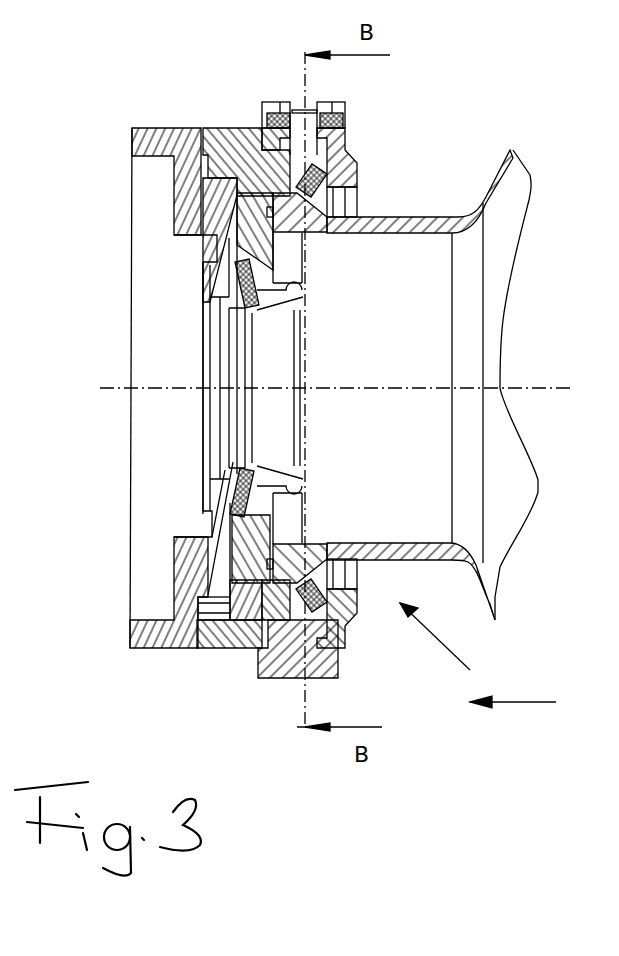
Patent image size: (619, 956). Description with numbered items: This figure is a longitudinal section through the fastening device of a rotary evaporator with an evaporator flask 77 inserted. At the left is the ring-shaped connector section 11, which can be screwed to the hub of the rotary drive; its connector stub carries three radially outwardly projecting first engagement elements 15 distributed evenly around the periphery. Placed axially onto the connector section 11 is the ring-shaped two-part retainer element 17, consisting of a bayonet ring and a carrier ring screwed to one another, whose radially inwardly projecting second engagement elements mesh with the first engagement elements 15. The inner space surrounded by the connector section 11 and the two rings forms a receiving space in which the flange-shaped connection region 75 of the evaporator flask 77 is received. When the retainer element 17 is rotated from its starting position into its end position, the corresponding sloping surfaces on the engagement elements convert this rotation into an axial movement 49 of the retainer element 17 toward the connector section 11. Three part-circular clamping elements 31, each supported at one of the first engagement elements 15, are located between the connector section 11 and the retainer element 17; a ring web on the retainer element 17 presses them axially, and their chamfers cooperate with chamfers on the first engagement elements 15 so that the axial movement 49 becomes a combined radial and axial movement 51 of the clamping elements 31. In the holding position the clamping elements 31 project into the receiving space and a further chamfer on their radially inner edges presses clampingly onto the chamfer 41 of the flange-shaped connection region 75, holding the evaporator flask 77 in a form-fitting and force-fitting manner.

The connector section 11 is at (158, 137).
The first engagement elements 15 is at (277, 170).
The retainer element 17 is at (343, 147).
The clamping elements 31 is at (316, 183).
The chamfer 41 is at (327, 192).
The axial movement 49 is at (517, 697).
The combined radial and axial movement 51 is at (433, 637).
The flange-shaped connection region 75 is at (313, 233).
The evaporator flask 77 is at (500, 183).